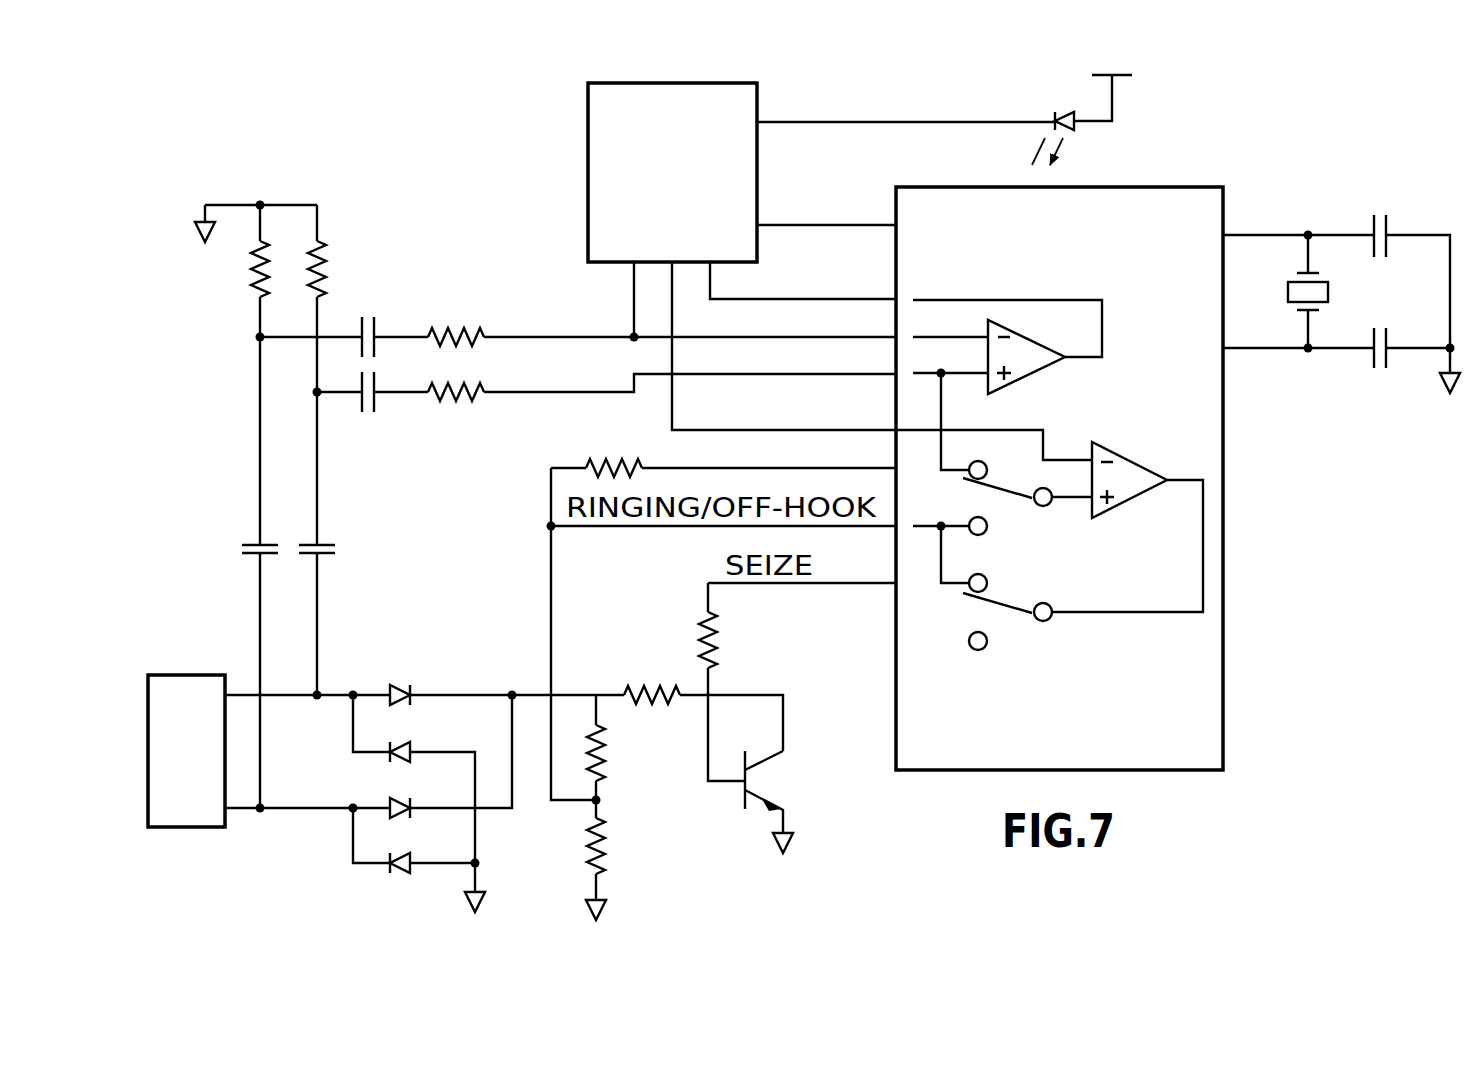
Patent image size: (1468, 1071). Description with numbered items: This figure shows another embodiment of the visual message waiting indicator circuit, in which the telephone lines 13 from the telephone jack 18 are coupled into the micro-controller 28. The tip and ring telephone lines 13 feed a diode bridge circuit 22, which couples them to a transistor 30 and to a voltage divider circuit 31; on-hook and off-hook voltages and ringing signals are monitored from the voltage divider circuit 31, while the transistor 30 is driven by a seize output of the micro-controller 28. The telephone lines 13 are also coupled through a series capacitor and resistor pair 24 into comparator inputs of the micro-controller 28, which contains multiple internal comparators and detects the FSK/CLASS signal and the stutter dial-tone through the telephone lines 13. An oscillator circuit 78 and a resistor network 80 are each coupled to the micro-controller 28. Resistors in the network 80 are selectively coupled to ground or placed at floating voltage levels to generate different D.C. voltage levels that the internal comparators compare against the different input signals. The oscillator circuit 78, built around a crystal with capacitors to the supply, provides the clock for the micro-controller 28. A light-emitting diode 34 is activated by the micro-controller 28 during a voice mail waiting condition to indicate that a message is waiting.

The telephone lines 13 is at (288, 700).
The telephone jack 18 is at (204, 762).
The diode bridge circuit 22 is at (376, 670).
The coupling network (capacitors and resistors) 24 is at (400, 306).
The micro-controller 28 is at (1081, 752).
The transistor 30 is at (806, 798).
The voltage divider circuit 31 is at (640, 845).
The light-emitting diode 34 is at (1057, 112).
The oscillator circuit 78 is at (1358, 191).
The resistor network 80 is at (691, 214).